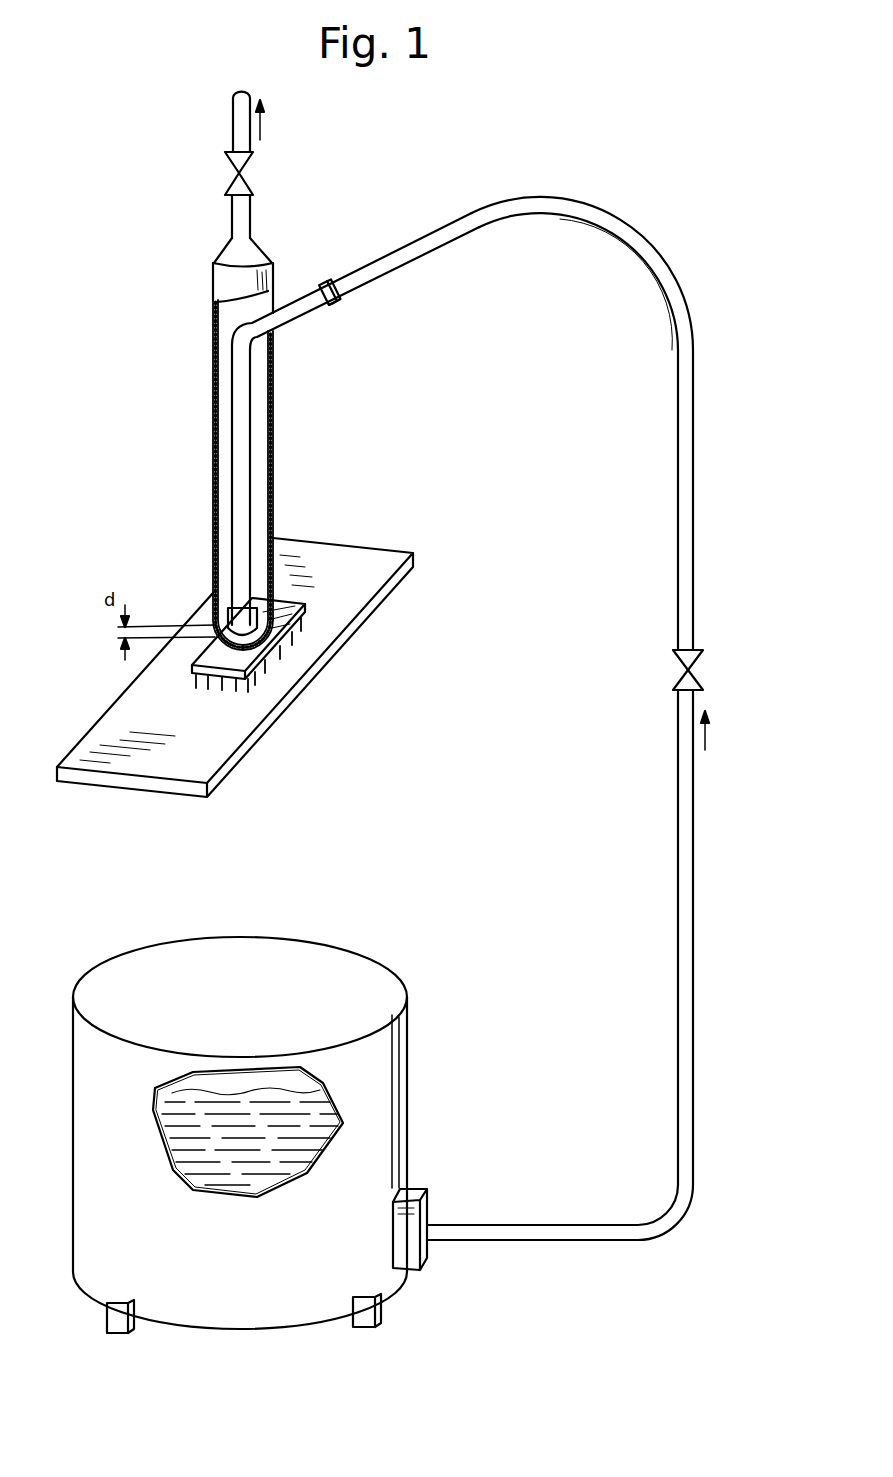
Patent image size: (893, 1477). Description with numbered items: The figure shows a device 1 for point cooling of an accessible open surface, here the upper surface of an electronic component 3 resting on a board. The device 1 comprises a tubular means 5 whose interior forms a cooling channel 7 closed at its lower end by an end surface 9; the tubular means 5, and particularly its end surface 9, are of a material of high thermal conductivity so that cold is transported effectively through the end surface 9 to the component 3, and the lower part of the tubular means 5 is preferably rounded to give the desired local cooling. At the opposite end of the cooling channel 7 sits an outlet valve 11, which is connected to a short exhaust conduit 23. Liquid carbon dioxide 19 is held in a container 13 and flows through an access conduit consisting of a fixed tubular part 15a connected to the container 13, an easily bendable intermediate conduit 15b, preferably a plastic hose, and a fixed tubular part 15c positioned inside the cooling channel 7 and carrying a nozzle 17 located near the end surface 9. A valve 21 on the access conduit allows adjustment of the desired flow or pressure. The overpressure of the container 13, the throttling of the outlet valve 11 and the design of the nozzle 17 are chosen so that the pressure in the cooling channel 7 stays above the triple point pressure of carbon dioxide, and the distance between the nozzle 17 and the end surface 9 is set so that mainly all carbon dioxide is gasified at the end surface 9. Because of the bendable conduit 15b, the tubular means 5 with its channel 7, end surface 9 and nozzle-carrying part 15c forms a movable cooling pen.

The device 1 is at (504, 185).
The electronic component 3 is at (250, 680).
The tubular means 5 is at (213, 378).
The cooling channel 7 is at (268, 474).
The end surface 9 is at (262, 663).
The outlet valve 11 is at (238, 173).
The container 13 is at (300, 1112).
The fixed tubular part 15a is at (683, 918).
The intermediate conduit 15b is at (683, 437).
The fixed tubular part 15c is at (238, 430).
The nozzle 17 is at (214, 620).
The liquid carbon dioxide 19 is at (370, 1272).
The valve 21 is at (692, 662).
The exhaust conduit 23 is at (233, 113).